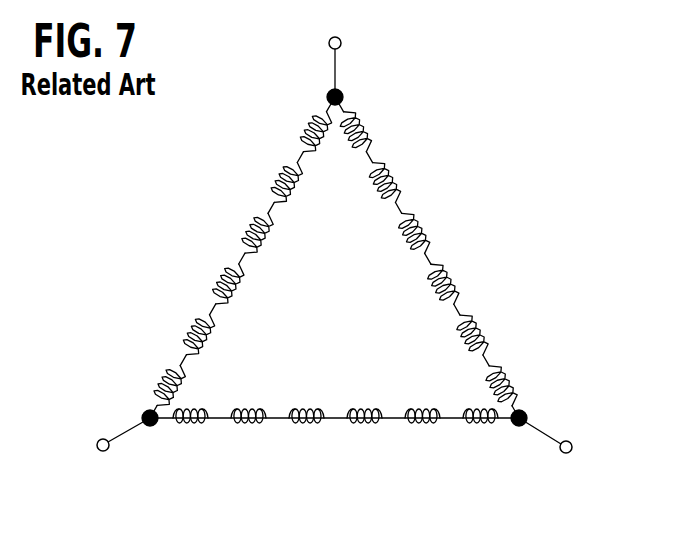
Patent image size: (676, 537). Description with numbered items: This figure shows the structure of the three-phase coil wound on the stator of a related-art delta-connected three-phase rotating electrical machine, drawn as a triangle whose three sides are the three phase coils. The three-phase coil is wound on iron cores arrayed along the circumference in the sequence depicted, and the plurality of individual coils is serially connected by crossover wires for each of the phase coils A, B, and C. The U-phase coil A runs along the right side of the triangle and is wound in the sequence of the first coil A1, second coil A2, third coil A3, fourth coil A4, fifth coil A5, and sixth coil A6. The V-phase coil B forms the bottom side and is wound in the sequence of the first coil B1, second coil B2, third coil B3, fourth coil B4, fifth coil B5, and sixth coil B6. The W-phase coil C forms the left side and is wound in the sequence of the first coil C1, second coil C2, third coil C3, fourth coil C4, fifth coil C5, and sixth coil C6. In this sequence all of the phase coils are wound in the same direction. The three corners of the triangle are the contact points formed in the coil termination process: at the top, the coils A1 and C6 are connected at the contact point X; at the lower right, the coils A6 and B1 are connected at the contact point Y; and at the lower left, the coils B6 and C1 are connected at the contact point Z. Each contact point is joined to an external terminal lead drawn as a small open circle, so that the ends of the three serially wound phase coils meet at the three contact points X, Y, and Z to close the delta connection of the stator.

The U-phase coil A is at (438, 257).
The V-phase coil B is at (334, 464).
The W-phase coil C is at (231, 257).
The first coil of U-phase coil A1 is at (366, 129).
The second coil of U-phase coil A2 is at (397, 183).
The third coil of U-phase coil A3 is at (424, 233).
The fourth coil of U-phase coil A4 is at (454, 284).
The fifth coil of U-phase coil A5 is at (484, 335).
The sixth coil of U-phase coil A6 is at (510, 386).
The first coil of V-phase coil B1 is at (480, 432).
The second coil of V-phase coil B2 is at (422, 432).
The third coil of V-phase coil B3 is at (364, 432).
The fourth coil of V-phase coil B4 is at (306, 432).
The fifth coil of V-phase coil B5 is at (248, 432).
The sixth coil of V-phase coil B6 is at (193, 432).
The first coil of W-phase coil C1 is at (158, 386).
The second coil of W-phase coil C2 is at (185, 333).
The third coil of W-phase coil C3 is at (215, 281).
The fourth coil of W-phase coil C4 is at (244, 231).
The fifth coil of W-phase coil C5 is at (271, 181).
The sixth coil of W-phase coil C6 is at (302, 129).
The contact point X is at (334, 53).
The contact point Y is at (556, 441).
The contact point Z is at (113, 439).